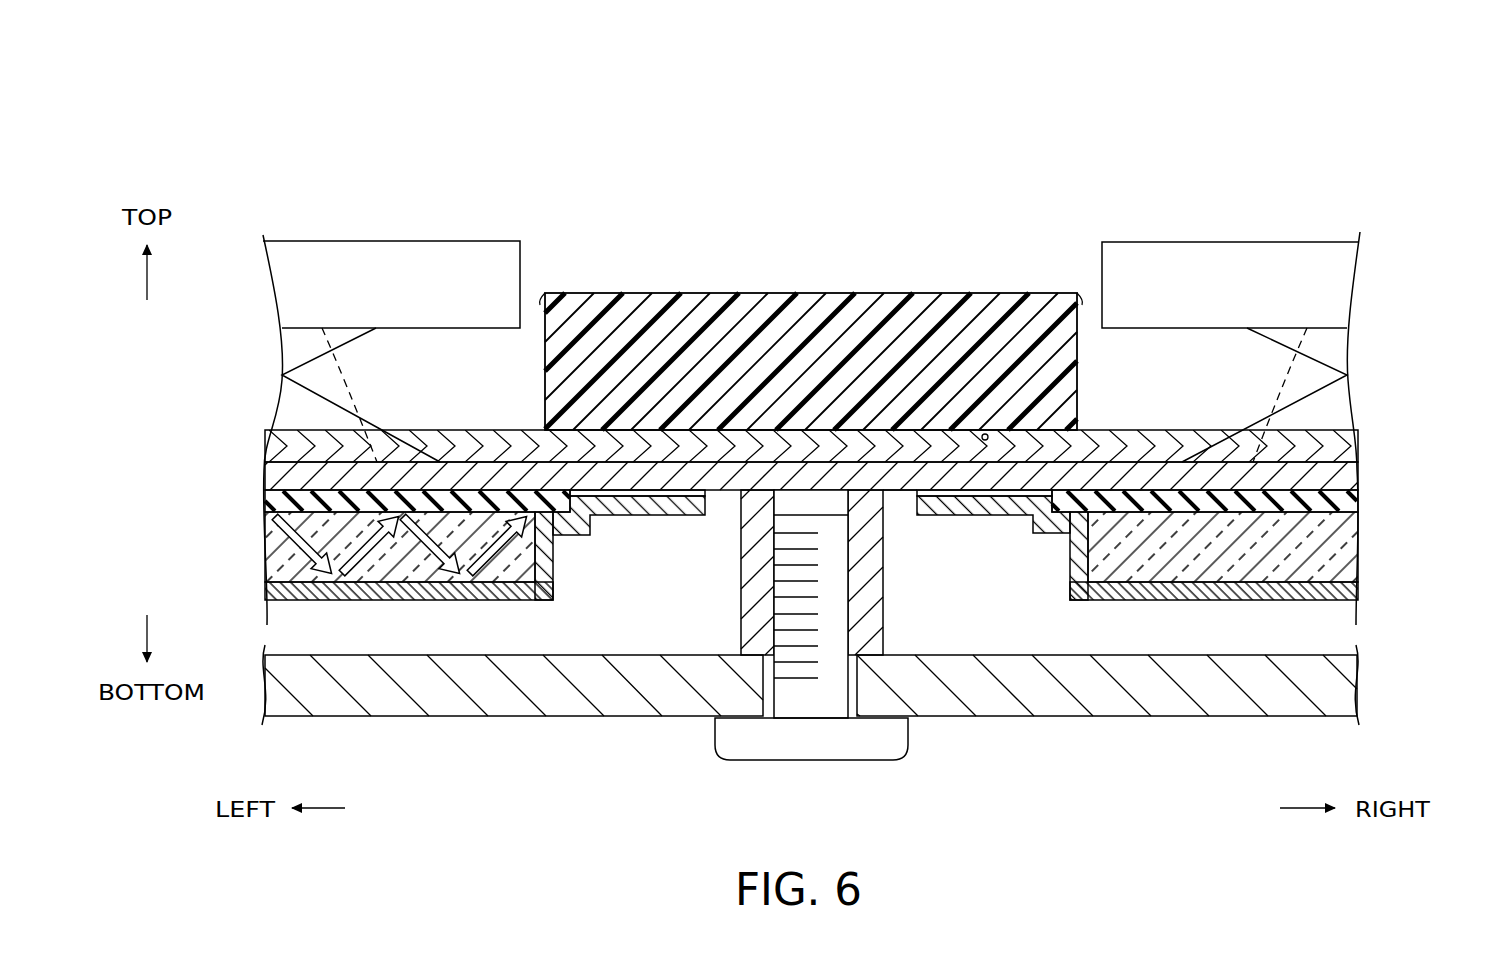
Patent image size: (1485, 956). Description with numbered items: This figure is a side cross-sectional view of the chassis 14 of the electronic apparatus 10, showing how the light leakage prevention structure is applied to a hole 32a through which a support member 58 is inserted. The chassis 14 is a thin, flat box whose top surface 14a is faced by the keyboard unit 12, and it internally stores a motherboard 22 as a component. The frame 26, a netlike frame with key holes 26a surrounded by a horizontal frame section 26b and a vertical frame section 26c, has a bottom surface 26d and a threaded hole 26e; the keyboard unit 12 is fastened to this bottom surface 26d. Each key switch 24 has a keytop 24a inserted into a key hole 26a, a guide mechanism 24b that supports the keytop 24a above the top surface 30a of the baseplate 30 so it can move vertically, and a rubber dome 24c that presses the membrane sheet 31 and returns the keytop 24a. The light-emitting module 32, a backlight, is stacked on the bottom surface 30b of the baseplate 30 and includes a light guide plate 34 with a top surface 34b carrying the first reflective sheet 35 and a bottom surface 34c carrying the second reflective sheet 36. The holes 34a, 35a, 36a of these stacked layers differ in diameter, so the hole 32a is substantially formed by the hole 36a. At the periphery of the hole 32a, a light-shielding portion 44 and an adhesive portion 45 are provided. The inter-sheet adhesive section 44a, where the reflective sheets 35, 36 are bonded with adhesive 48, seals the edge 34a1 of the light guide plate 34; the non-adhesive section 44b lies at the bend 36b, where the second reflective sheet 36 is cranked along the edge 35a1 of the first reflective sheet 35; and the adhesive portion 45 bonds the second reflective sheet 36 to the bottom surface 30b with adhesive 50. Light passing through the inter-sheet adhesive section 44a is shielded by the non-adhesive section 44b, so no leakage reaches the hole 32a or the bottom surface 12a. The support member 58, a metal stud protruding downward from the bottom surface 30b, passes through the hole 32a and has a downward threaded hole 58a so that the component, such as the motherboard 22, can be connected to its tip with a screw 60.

The electronic apparatus 10 is at (798, 433).
The chassis 14 is at (215, 76).
The keyboard unit 12 is at (1198, 176).
The bottom surface 12a is at (335, 602).
The top surface 14a is at (635, 292).
The motherboard 22 is at (635, 708).
The key switch 24 is at (337, 210).
The keytop 24a is at (420, 255).
The guide mechanism 24b is at (284, 375).
The rubber dome 24c is at (282, 375).
The frame 26 is at (844, 286).
The key hole 26a is at (540, 295).
The horizontal frame section 26b is at (811, 312).
The vertical frame section 26c is at (811, 312).
The bottom surface 26d is at (985, 437).
The threaded hole 26e is at (800, 362).
The baseplate 30 is at (1352, 480).
The top surface 30a is at (300, 468).
The bottom surface 30b is at (428, 465).
The membrane sheet 31 is at (1352, 448).
The light-emitting module 32 is at (182, 480).
The hole 32a is at (936, 552).
The light guide plate 34 is at (260, 540).
The hole 34a is at (527, 580).
The edge 34a1 is at (528, 601).
The top surface 34b is at (1355, 500).
The bottom surface 34c is at (1355, 592).
The first reflective sheet 35 is at (260, 493).
The hole 35a is at (811, 424).
The edge 35a1 is at (585, 490).
The second reflective sheet 36 is at (260, 588).
The hole 36a is at (990, 612).
The bend 36b is at (1033, 522).
The light-shielding portion 44 is at (672, 612).
The inter-sheet adhesive section 44a is at (572, 537).
The non-adhesive section 44b is at (620, 515).
The adhesive portion 45 is at (660, 513).
The adhesive 48 is at (1055, 535).
The adhesive 50 is at (963, 513).
The support member 58 is at (862, 628).
The threaded hole 58a is at (782, 608).
The screw 60 is at (805, 760).